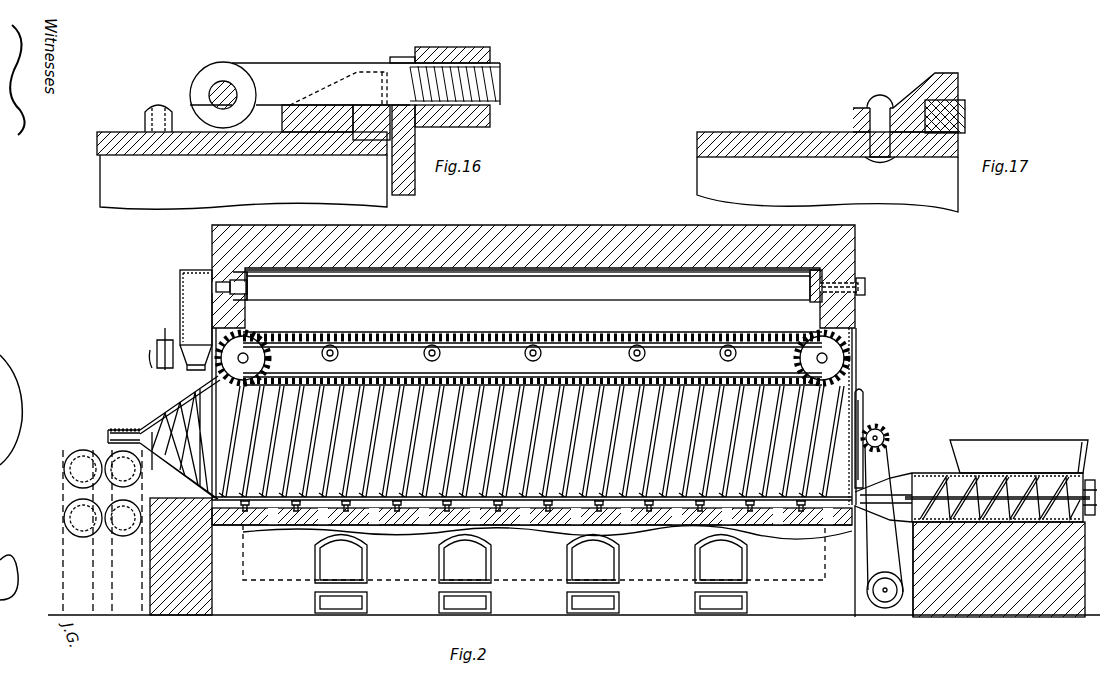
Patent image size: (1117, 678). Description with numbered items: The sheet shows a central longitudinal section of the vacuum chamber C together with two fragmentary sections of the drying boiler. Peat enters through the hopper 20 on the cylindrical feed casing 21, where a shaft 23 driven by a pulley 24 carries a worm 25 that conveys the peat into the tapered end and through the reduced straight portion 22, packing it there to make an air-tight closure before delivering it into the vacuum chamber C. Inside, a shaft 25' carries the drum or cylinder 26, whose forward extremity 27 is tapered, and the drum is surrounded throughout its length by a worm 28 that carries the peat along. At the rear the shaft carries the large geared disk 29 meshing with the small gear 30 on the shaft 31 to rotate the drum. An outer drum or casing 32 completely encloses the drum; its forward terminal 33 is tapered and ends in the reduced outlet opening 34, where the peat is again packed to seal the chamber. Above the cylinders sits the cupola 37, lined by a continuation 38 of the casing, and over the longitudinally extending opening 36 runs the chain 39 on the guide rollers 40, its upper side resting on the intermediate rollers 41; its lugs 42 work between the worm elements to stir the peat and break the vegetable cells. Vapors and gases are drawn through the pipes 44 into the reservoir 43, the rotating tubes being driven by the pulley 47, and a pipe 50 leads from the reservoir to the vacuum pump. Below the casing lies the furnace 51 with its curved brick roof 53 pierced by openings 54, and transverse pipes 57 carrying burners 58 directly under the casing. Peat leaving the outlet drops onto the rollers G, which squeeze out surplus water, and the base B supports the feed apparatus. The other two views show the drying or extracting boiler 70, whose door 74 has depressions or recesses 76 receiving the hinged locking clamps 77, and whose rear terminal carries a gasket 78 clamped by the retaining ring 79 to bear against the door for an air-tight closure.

In FIG. 2, the hopper 20 is at (1056, 450).
In FIG. 2, the cylindrical feed casing 21 is at (924, 474).
In FIG. 2, the reduced straight portion 22 is at (892, 485).
In FIG. 2, the shaft 23 is at (915, 496).
In FIG. 2, the pulley 24 is at (1092, 480).
In FIG. 2, the worm 25 is at (997, 480).
In FIG. 2, the shaft 25' is at (135, 408).
In FIG. 2, the drum or cylinder 26 is at (856, 385).
In FIG. 2, the forward extremity 27 is at (168, 410).
In FIG. 2, the worm 28 is at (510, 436).
In FIG. 2, the large geared disk 29 is at (866, 395).
In FIG. 2, the small gear 30 is at (878, 428).
In FIG. 2, the shaft 31 is at (886, 432).
In FIG. 2, the outer drum or casing 32 is at (796, 525).
In FIG. 2, the forward terminal 33 is at (181, 546).
In FIG. 2, the reduced outlet opening 34 is at (114, 430).
In FIG. 2, the longitudinally extending opening 36 is at (602, 378).
In FIG. 2, the cupola 37 is at (528, 299).
In FIG. 2, the continuation of the casing 38 is at (600, 268).
In FIG. 2, the chain 39 is at (806, 302).
In FIG. 2, the guide rollers 40 is at (250, 358).
In FIG. 2, the intermediate rollers 41 is at (440, 354).
In FIG. 2, the lugs 42 is at (272, 338).
In FIG. 2, the reservoir 43 is at (192, 280).
In FIG. 2, the pipes 44 is at (250, 293).
In FIG. 2, the pulley 47 is at (866, 288).
In FIG. 2, the pipe 50 is at (166, 328).
In FIG. 2, the furnace 51 is at (658, 532).
In FIG. 2, the brick roof 53 is at (288, 525).
In FIG. 2, the openings 54 is at (412, 525).
In FIG. 2, the transverse pipes 57 is at (336, 525).
In FIG. 2, the burners 58 is at (250, 492).
In FIG. 16, the drying or extracting boiler 70 is at (116, 132).
In FIG. 17, the drying or extracting boiler 70 is at (788, 132).
In FIG. 16, the door 74 is at (418, 185).
In FIG. 16, the depressions or recesses 76 is at (396, 57).
In FIG. 16, the hinged locking clamps 77 is at (312, 63).
In FIG. 16, the gasket 78 is at (362, 140).
In FIG. 17, the gasket 78 is at (966, 118).
In FIG. 16, the retaining ring 79 is at (305, 105).
In FIG. 17, the retaining ring 79 is at (905, 100).
In FIG. 2, the rollers G is at (89, 531).
In FIG. 2, the vacuum chamber C is at (865, 331).
In FIG. 2, the base B is at (1006, 567).